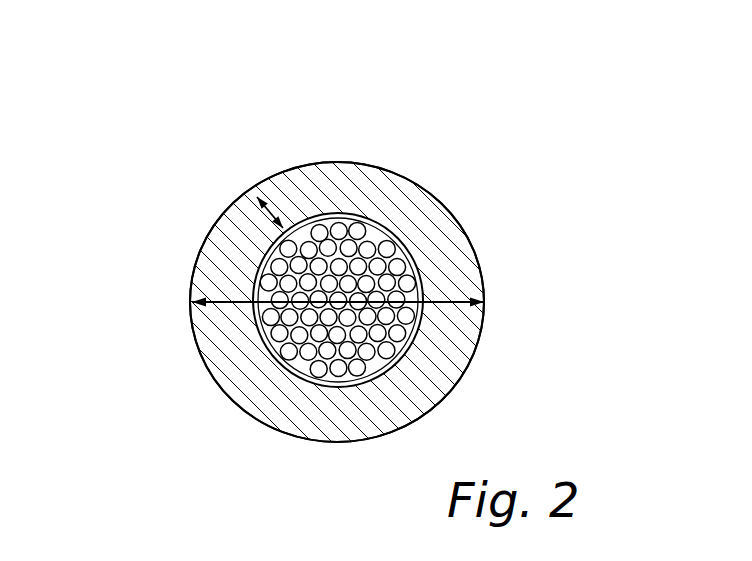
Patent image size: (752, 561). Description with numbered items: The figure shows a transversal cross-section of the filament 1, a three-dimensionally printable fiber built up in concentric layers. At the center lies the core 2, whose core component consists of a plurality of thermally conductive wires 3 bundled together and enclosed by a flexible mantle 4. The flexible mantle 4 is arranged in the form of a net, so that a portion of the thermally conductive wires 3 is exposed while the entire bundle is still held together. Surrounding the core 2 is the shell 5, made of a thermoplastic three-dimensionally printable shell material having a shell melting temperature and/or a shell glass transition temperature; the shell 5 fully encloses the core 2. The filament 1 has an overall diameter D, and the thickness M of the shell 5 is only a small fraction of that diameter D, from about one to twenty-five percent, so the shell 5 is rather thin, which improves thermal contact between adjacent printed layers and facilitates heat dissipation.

The filament 1 is at (190, 185).
The core 2 is at (233, 345).
The thermally conductive wires 3 is at (358, 253).
The flexible mantle 4 is at (422, 275).
The shell 5 is at (431, 217).
The thickness of the shell M is at (273, 214).
The diameter of the filament D is at (448, 305).